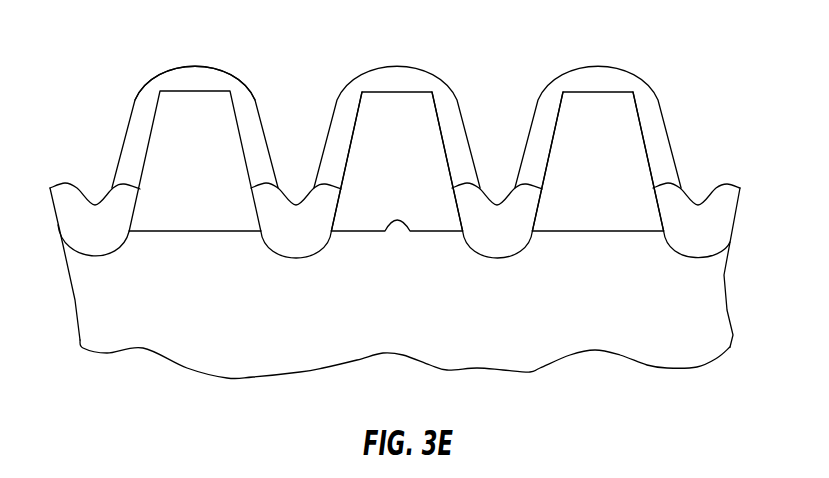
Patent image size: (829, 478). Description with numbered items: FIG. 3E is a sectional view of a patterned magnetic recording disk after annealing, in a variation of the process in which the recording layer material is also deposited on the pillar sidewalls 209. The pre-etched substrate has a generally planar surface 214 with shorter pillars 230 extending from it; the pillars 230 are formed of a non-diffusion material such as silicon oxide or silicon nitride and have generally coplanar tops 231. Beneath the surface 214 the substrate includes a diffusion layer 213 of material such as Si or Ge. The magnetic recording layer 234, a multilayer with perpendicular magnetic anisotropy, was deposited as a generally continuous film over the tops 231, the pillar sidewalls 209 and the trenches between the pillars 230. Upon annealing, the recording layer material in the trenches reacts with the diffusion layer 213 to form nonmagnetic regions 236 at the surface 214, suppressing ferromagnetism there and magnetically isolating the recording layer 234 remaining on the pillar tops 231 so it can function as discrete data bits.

The pillar sidewalls 209 is at (152, 117).
The diffusion layer 213 is at (643, 347).
The planar surface 214 is at (410, 231).
The pillars 230 is at (370, 145).
The pillar tops 231 is at (180, 91).
The magnetic recording layer 234 is at (210, 75).
The nonmagnetic regions 236 is at (98, 235).